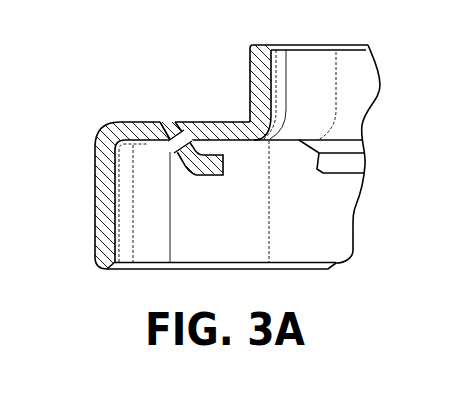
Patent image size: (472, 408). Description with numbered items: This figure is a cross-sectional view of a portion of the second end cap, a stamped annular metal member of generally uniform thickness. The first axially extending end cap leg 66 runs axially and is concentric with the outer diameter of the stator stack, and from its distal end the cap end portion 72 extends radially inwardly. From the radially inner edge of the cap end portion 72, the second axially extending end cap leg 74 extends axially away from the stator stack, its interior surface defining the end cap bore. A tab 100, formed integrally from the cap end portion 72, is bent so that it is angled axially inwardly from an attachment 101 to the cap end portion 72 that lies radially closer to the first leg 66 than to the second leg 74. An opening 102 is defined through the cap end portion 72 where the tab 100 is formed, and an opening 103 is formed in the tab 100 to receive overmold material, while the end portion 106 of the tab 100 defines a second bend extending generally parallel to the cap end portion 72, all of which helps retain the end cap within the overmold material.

The first axially extending end cap leg 66 is at (93, 217).
The cap end portion 72 is at (133, 122).
The second axially extending end cap leg 74 is at (266, 80).
The tab 100 is at (174, 125).
The attachment 101 is at (134, 122).
The opening 102 is at (215, 128).
The opening 103 is at (173, 152).
The end portion 106 is at (227, 165).